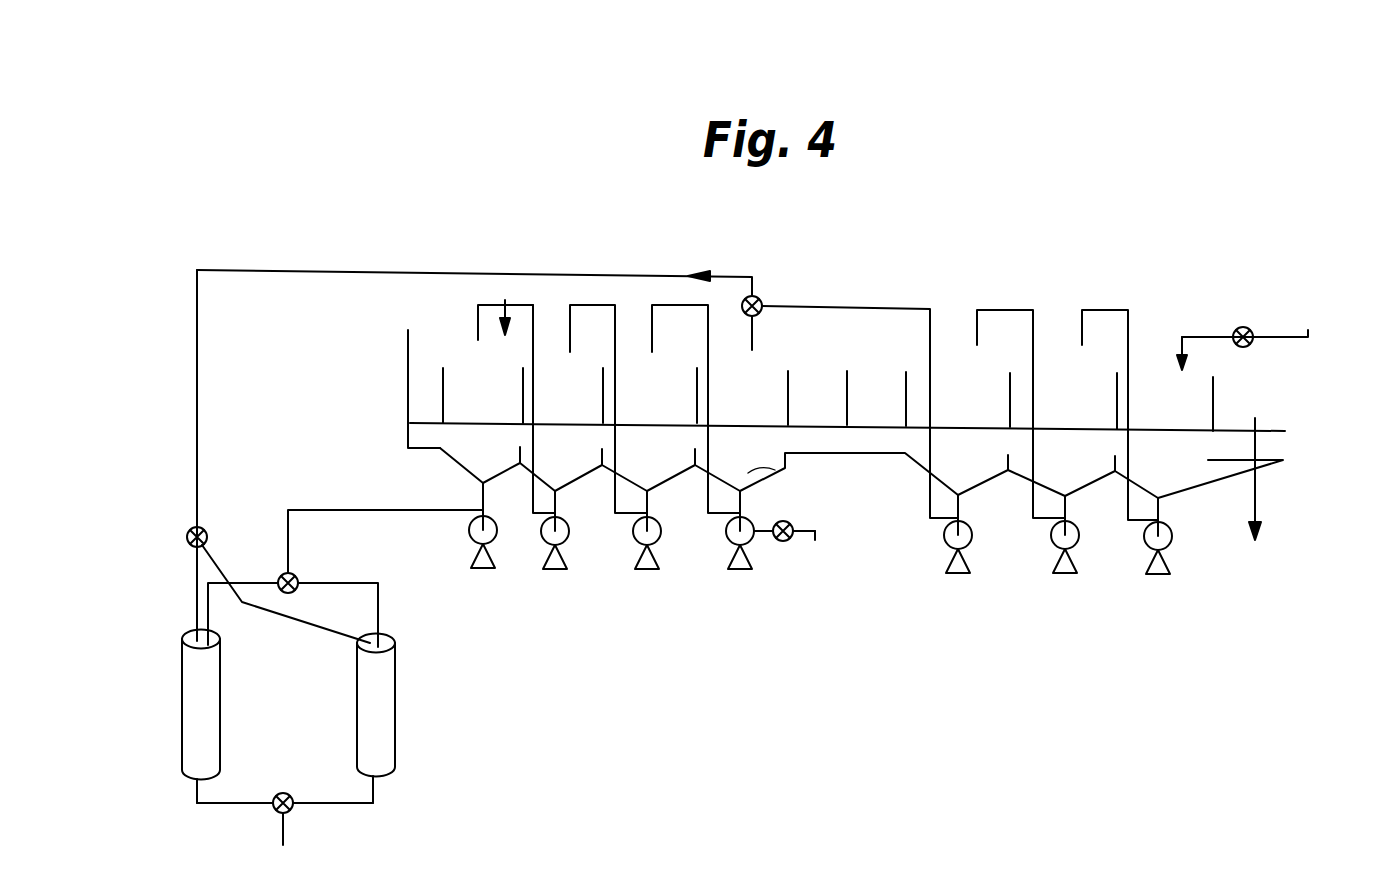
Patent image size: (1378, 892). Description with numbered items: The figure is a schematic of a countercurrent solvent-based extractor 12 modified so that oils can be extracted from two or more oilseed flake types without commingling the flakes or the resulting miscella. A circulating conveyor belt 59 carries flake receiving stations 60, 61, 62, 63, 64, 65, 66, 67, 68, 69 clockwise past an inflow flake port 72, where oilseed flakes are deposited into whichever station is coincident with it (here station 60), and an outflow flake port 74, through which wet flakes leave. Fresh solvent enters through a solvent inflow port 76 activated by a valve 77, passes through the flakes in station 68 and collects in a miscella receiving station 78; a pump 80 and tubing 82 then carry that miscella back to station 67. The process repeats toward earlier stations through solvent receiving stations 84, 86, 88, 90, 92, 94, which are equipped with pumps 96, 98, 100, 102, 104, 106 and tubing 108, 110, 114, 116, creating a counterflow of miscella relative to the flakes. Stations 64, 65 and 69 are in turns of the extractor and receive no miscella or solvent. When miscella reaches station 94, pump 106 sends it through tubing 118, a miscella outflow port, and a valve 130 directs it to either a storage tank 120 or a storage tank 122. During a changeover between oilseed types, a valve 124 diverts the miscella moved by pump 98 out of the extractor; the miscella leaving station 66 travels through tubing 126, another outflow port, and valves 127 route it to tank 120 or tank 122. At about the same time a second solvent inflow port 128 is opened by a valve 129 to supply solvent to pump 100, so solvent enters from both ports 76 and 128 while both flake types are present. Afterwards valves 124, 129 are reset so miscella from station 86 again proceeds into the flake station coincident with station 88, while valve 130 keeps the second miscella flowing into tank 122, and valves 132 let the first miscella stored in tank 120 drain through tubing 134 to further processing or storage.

The countercurrent solvent-based extractor 12 is at (948, 118).
The tubing 126 is at (285, 271).
The flake receiving station 69 is at (424, 404).
The flake receiving station 60 is at (473, 407).
The inflow flake port 72 is at (505, 320).
The solvent receiving station 92 is at (532, 433).
The flake receiving station 61 is at (575, 403).
The flake receiving station 62 is at (657, 405).
The solvent receiving station 90 is at (637, 440).
The flake receiving station 63 is at (752, 412).
The valve 124 is at (748, 294).
The tubing 110 is at (928, 437).
The flake receiving station 64 is at (818, 412).
The flake receiving station 65 is at (872, 415).
The flake receiving station 66 is at (973, 413).
The flake receiving station 67 is at (1077, 410).
The flake receiving station 68 is at (1165, 417).
The tubing 108 is at (1027, 435).
The tubing 82 is at (1124, 503).
The solvent inflow port 76 is at (1308, 332).
The valve 77 is at (1236, 328).
The outflow flake port 74 is at (1258, 500).
The circulating conveyor belt 59 is at (440, 434).
The solvent receiving station 94 is at (470, 467).
The tubing 116 is at (535, 462).
The tubing 114 is at (561, 539).
The pump 106 is at (468, 542).
The pump 104 is at (560, 538).
The pump 102 is at (660, 546).
The pump 100 is at (728, 548).
The valve 129 is at (780, 548).
The second solvent inflow port 128 is at (812, 542).
The solvent receiving station 88 is at (777, 470).
The solvent receiving station 86 is at (953, 482).
The pump 98 is at (950, 573).
The solvent receiving station 84 is at (1070, 500).
The pump 96 is at (1075, 550).
The pump 80 is at (1175, 545).
The miscella receiving station 78 is at (1180, 490).
The valve 127 is at (187, 537).
The storage tank 120 is at (185, 672).
The storage tank 122 is at (395, 730).
The valve 130 is at (285, 573).
The tubing 118 is at (385, 512).
The valve 132 is at (275, 810).
The tubing 134 is at (285, 835).